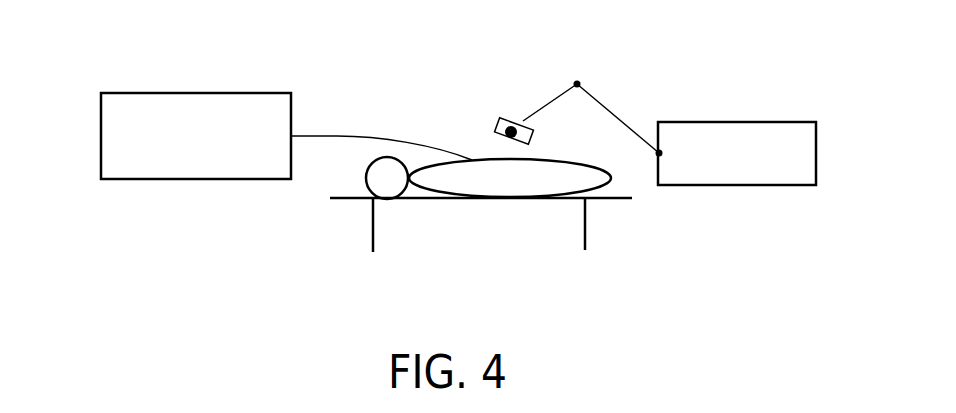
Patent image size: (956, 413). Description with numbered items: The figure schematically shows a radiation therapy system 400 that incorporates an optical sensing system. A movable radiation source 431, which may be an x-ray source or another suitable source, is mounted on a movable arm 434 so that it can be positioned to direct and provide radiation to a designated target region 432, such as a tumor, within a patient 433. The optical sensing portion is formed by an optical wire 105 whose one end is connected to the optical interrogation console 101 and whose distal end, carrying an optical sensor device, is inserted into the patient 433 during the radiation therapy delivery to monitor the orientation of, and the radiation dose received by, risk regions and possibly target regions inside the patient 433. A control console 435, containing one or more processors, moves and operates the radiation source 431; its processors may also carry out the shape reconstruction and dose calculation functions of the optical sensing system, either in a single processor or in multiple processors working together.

The radiation therapy system 400 is at (442, 70).
The optical interrogation console 101 is at (140, 168).
The optical wire 105 is at (335, 133).
The radiation source 431 is at (512, 126).
The target region 432 is at (492, 200).
The patient 433 is at (598, 194).
The movable arm 434 is at (613, 113).
The control console 435 is at (788, 178).